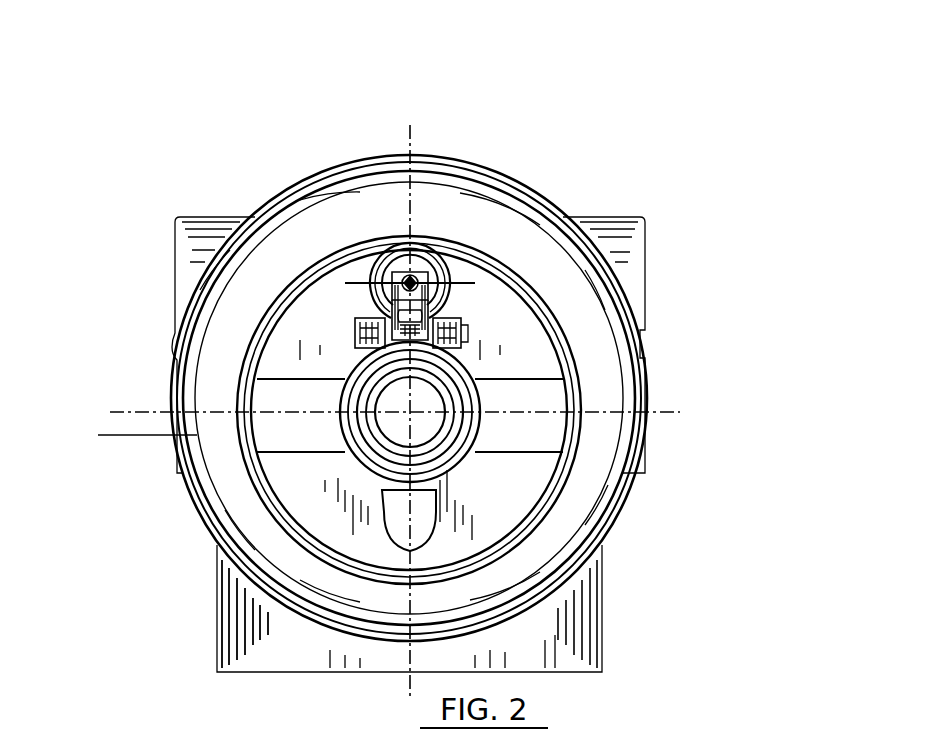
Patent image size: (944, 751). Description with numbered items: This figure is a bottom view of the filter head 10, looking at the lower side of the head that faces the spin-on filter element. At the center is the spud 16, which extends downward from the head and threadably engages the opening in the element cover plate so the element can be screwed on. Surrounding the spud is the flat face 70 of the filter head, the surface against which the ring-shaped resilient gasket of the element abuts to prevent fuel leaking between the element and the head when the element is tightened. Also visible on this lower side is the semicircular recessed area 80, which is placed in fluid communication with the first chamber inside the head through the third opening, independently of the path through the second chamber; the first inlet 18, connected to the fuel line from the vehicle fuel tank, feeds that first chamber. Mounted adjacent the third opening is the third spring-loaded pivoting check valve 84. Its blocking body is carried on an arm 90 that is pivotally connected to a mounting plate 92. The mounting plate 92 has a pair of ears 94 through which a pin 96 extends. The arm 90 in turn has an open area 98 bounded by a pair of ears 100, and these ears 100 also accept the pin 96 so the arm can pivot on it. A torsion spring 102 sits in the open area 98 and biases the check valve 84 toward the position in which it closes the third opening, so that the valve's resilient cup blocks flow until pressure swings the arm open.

The filter head 10 is at (642, 131).
The spud 16 is at (350, 418).
The first inlet 18 is at (646, 242).
The flat face 70 is at (597, 359).
The semicircular recessed area 80 is at (515, 312).
The third spring loaded pivoting check valve 84 is at (445, 268).
The arm 90 is at (425, 272).
The mounting plate 92 is at (458, 333).
The ears 94 is at (430, 316).
The pin 96 is at (355, 331).
The open area 98 is at (390, 302).
The ears 100 is at (402, 327).
The torsion spring 102 is at (348, 377).